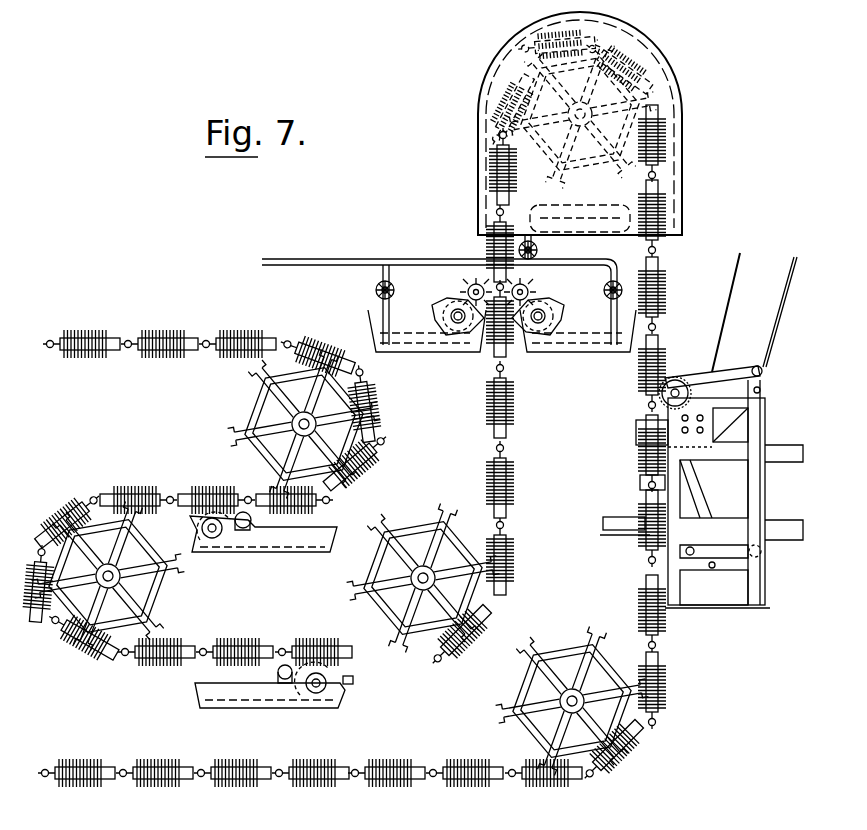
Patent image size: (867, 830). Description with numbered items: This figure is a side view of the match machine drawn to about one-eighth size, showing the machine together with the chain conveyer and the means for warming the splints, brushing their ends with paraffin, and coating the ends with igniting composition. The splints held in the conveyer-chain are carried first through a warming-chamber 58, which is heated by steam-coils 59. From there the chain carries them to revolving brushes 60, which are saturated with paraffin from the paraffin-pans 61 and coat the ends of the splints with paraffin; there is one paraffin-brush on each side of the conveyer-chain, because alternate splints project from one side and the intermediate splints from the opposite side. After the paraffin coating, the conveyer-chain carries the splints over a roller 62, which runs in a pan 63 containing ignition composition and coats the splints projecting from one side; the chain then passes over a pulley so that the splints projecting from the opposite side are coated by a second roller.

The warming-chamber 58 is at (682, 204).
The steam-coils 59 is at (595, 208).
The revolving brushes 60 is at (468, 296).
The paraffin-pans 61 is at (374, 324).
The roller 62 is at (200, 540).
The pan 63 is at (195, 692).